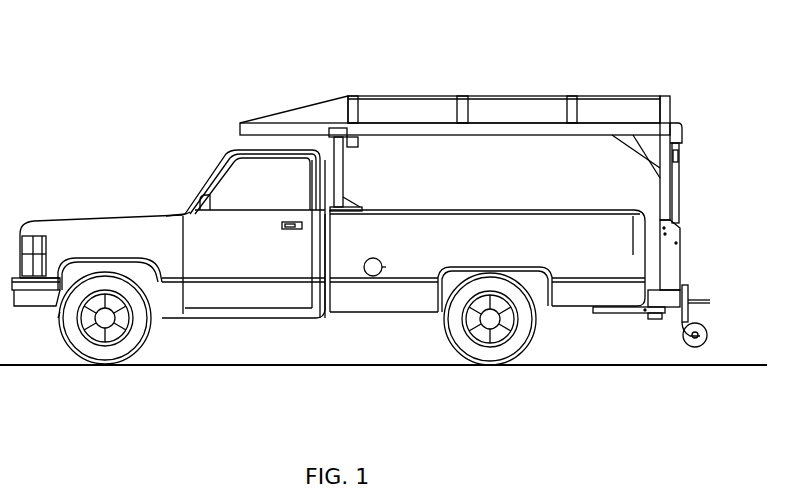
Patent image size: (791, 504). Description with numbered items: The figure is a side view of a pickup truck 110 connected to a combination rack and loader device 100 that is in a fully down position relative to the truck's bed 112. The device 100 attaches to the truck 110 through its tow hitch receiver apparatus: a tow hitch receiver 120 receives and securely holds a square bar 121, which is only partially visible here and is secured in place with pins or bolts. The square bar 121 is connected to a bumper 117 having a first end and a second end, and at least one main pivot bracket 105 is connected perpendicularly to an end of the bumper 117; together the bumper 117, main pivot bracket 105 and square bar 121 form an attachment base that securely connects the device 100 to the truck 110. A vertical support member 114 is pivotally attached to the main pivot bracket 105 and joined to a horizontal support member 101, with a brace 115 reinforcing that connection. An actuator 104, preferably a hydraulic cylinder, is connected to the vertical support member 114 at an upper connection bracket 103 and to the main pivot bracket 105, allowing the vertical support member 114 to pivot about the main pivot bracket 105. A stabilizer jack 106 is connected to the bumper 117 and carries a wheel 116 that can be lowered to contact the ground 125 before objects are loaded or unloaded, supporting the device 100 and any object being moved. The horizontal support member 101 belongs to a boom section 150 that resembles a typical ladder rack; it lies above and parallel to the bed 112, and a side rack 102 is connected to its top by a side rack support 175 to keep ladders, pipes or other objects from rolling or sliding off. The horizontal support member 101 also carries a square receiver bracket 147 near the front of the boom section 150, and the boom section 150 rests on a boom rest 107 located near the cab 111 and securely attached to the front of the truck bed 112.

The combination rack and loader device 100 is at (240, 129).
The horizontal support member 101 is at (497, 128).
The side rack 102 is at (413, 95).
The upper connection bracket 103 is at (678, 136).
The actuator 104 is at (673, 190).
The main pivot bracket 105 is at (680, 249).
The stabilizer jack 106 is at (690, 316).
The boom rest 107 is at (333, 146).
The pickup truck 110 is at (66, 221).
The cab 111 is at (198, 201).
The bed 112 is at (470, 210).
The vertical support member 114 is at (666, 169).
The brace 115 is at (637, 152).
The wheel 116 is at (694, 341).
The bumper 117 is at (667, 295).
The tow hitch receiver 120 is at (625, 314).
The square bar 121 is at (656, 314).
The ground 125 is at (336, 365).
The square receiver bracket 147 is at (356, 147).
The boom section 150 is at (436, 131).
The side rack support 175 is at (349, 108).